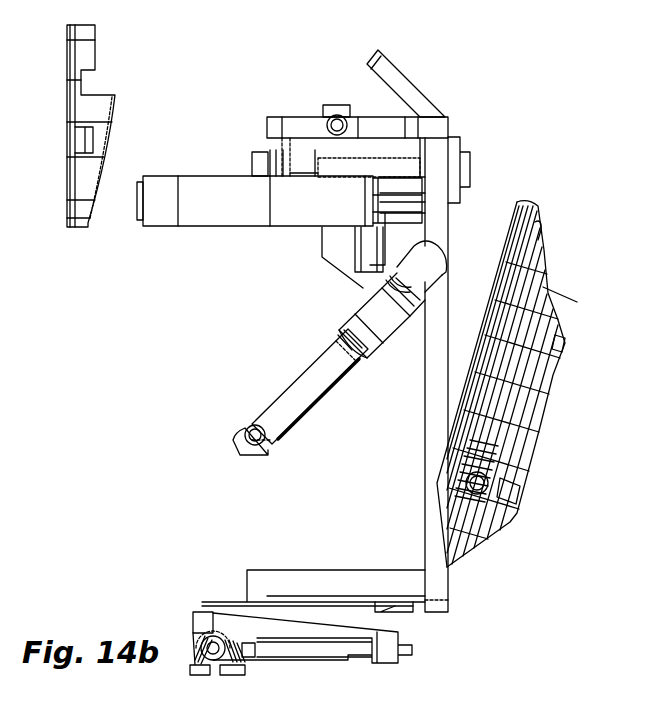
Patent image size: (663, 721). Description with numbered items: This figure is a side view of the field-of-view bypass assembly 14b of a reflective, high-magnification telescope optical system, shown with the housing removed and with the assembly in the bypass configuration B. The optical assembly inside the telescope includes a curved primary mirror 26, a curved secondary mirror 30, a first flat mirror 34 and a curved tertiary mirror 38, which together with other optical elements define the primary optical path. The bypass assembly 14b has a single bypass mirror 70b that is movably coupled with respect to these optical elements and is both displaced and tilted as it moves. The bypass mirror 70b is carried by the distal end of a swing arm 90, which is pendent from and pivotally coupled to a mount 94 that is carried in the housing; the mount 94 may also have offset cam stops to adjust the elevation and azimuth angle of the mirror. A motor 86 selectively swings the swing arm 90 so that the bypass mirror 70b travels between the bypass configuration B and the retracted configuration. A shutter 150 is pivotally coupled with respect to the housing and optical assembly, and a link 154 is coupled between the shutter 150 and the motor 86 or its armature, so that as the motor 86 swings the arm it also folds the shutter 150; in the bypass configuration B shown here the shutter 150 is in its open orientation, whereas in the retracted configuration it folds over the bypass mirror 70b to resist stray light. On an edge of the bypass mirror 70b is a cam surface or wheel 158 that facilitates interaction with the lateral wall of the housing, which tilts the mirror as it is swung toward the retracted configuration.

The curved secondary mirror 30 is at (86, 53).
The motor 86 is at (230, 180).
The mount 94 is at (332, 107).
The first flat mirror 34 is at (407, 92).
The curved primary mirror 26 is at (538, 212).
The swing arm 90 is at (390, 316).
The bypass mirror 70b is at (318, 377).
The field-of-view bypass assembly 14b is at (305, 341).
The cam surface or wheel 158 is at (240, 427).
The bypass configuration B is at (325, 403).
The shutter 150 is at (228, 600).
The curved tertiary mirror 38 is at (207, 633).
The link 154 is at (450, 553).